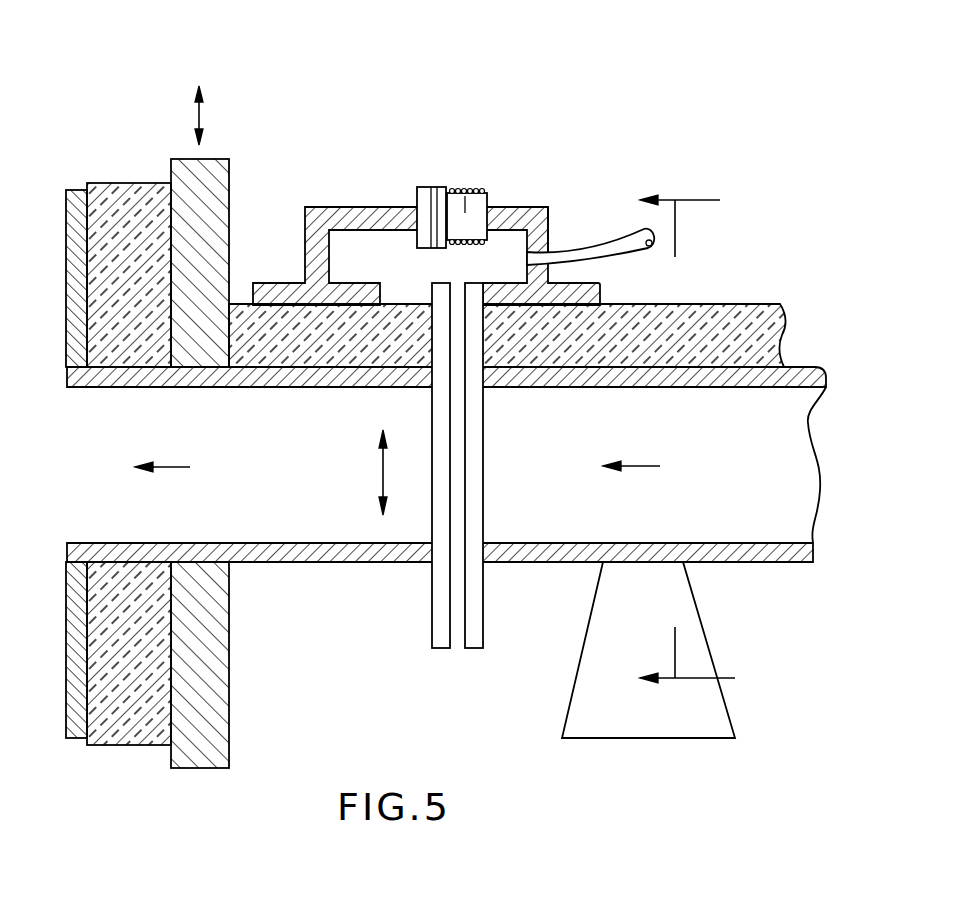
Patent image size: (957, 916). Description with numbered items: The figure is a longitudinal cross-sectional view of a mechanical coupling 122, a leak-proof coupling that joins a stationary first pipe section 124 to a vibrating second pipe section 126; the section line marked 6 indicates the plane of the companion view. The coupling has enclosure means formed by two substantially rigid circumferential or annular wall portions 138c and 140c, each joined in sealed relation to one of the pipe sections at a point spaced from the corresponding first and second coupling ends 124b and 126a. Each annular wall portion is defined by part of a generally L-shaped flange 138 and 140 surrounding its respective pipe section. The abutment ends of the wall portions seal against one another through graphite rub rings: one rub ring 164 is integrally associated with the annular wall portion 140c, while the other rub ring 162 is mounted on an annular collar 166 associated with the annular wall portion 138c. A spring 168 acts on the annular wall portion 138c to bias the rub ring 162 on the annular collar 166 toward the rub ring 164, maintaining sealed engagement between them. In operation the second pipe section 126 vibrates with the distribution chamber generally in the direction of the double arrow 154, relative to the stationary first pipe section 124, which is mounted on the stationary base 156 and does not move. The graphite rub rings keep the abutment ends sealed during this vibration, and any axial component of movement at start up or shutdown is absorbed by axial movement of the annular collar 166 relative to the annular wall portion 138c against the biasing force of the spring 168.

The mechanical coupling 122 is at (451, 331).
The first pipe section 124 is at (643, 548).
The first coupling end 124b is at (476, 553).
The second pipe section 126 is at (305, 548).
The second coupling end 126a is at (440, 555).
The L-shaped flange 138 is at (553, 203).
The circumferential or annular wall portion 138c is at (520, 207).
The L-shaped flange 140 is at (301, 200).
The circumferential or annular wall portion 140c is at (360, 213).
The double arrow 154 is at (383, 472).
The stationary base 156 is at (684, 614).
The abutment end / graphite rub ring 162 is at (446, 192).
The abutment end / graphite rub ring 164 is at (414, 188).
The annular collar 166 is at (465, 196).
The spring 168 is at (486, 192).
The section line 6- 6 is at (699, 439).